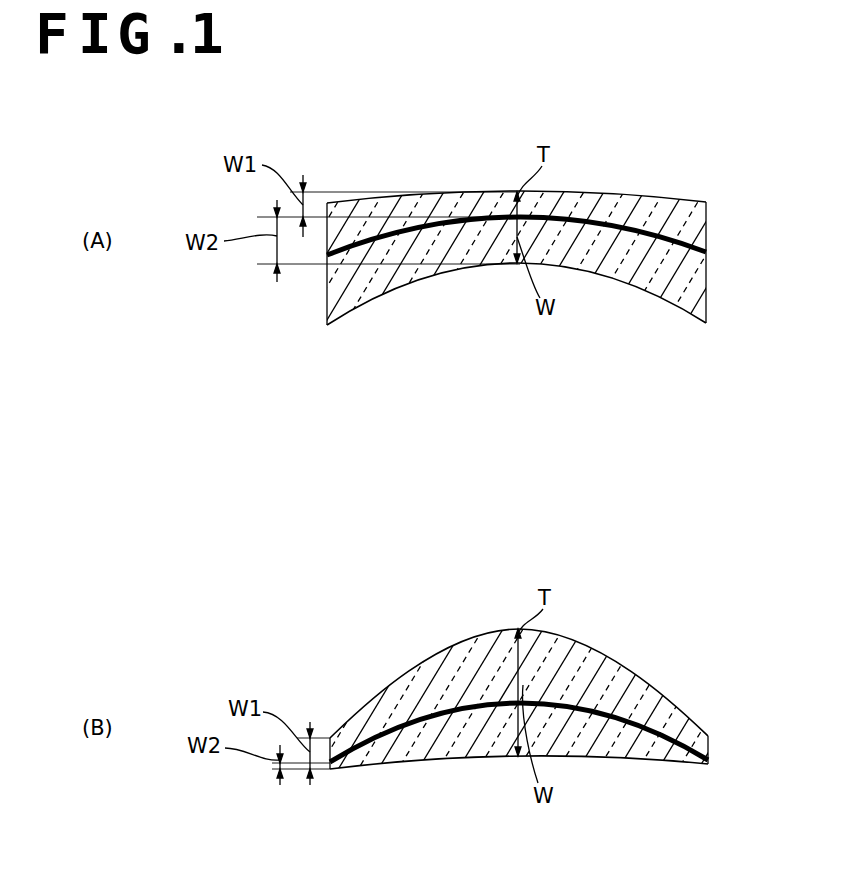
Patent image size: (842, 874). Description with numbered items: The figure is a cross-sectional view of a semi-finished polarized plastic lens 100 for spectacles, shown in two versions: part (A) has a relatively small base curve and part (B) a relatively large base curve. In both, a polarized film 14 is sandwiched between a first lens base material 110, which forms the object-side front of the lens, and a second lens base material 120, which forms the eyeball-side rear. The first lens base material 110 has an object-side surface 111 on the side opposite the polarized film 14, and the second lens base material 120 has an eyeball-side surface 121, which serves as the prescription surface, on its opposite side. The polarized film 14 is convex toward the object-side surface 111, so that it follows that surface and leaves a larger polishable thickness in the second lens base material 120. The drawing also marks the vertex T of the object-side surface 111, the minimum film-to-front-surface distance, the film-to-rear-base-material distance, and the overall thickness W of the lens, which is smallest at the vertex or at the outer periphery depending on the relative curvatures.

The plastic lens 100 is at (484, 97).
The first lens base material 110 is at (672, 210).
The object-side surface 111 is at (614, 192).
The second lens base material 120 is at (655, 297).
The eyeball-side surface 121 is at (613, 291).
The polarized film 14 is at (703, 246).